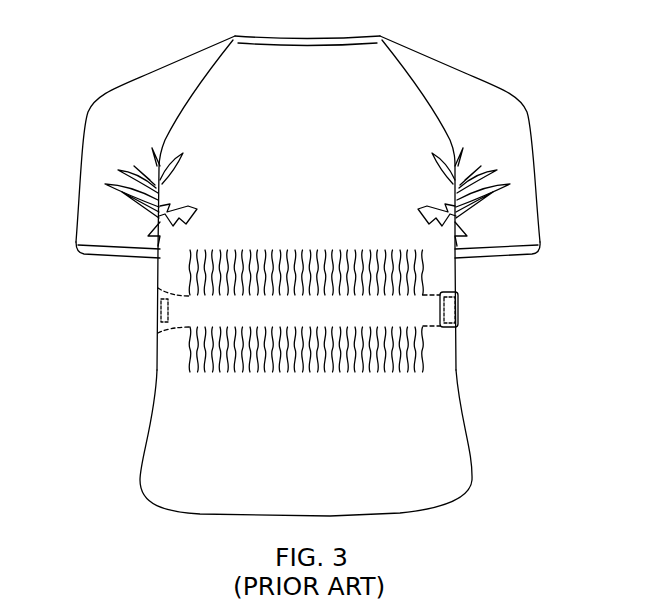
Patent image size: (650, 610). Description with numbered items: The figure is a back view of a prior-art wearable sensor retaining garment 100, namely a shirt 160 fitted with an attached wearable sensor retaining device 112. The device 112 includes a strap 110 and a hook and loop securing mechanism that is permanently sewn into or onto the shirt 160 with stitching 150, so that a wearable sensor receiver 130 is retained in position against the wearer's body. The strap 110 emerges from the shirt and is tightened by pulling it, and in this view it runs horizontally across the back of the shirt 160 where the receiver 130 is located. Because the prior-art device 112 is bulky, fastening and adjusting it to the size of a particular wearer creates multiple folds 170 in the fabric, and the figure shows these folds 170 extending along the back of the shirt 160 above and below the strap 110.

The wearable sensor retaining garment 100 is at (124, 40).
The strap 110 is at (458, 313).
The wearable sensor retaining device 112 is at (466, 337).
The wearable sensor receiver 130 is at (160, 310).
The stitching 150 is at (427, 327).
The shirt 160 is at (432, 472).
The folds 170 is at (237, 357).